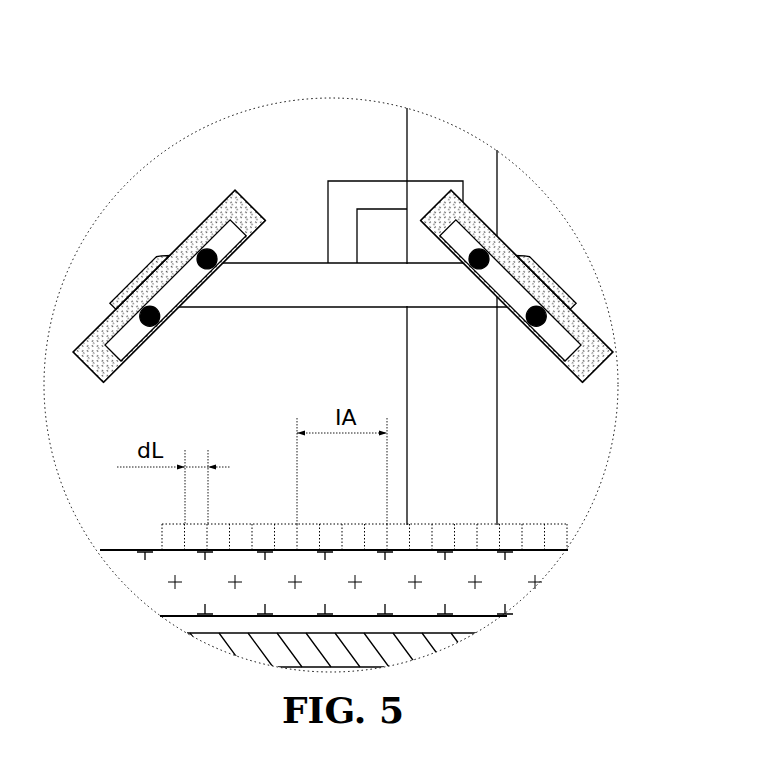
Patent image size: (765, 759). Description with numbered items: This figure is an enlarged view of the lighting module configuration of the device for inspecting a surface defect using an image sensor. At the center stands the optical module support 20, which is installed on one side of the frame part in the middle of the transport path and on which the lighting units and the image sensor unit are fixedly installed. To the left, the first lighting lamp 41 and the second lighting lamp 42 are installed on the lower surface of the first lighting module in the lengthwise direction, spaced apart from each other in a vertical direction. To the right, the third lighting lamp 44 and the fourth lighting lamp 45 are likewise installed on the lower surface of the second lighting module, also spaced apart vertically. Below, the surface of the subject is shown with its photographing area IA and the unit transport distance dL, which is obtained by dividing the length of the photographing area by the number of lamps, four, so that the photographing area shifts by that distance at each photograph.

The optical module support 20 is at (415, 138).
The first lighting lamp 41 is at (110, 303).
The second lighting lamp 42 is at (178, 237).
The third lighting lamp 44 is at (501, 238).
The fourth lighting lamp 45 is at (573, 308).